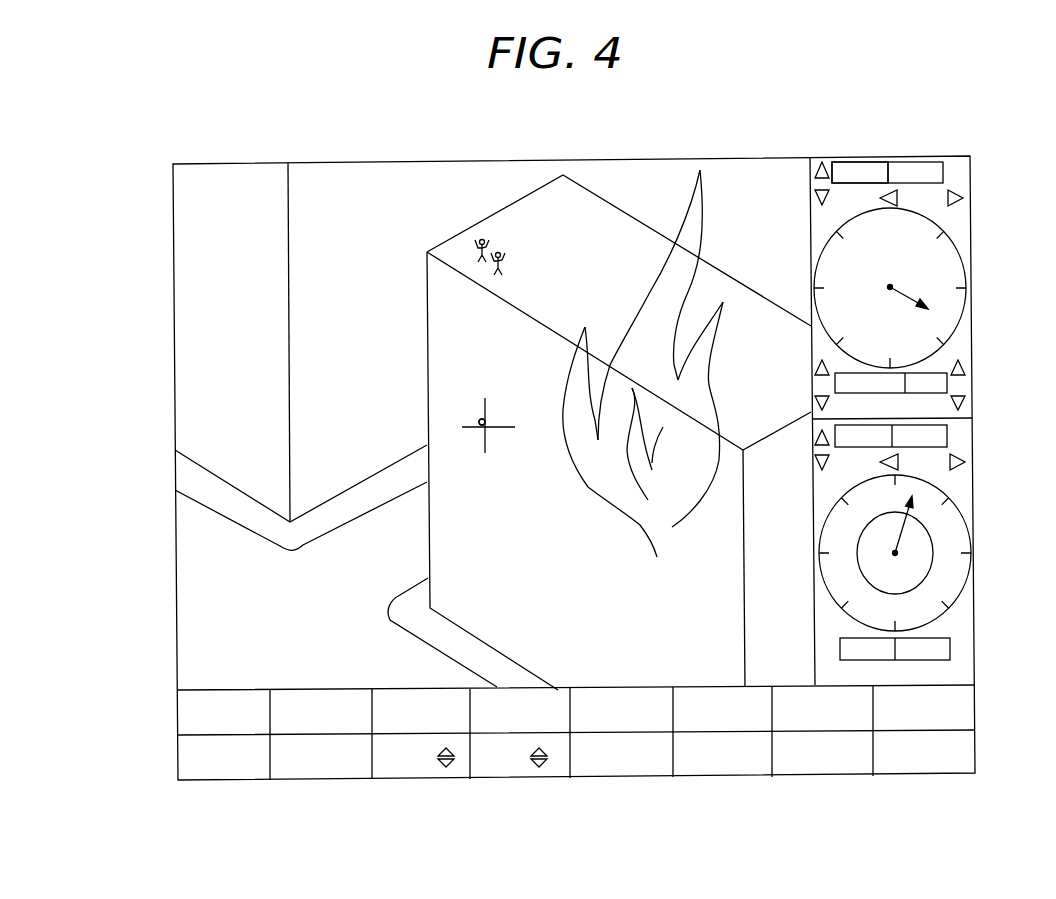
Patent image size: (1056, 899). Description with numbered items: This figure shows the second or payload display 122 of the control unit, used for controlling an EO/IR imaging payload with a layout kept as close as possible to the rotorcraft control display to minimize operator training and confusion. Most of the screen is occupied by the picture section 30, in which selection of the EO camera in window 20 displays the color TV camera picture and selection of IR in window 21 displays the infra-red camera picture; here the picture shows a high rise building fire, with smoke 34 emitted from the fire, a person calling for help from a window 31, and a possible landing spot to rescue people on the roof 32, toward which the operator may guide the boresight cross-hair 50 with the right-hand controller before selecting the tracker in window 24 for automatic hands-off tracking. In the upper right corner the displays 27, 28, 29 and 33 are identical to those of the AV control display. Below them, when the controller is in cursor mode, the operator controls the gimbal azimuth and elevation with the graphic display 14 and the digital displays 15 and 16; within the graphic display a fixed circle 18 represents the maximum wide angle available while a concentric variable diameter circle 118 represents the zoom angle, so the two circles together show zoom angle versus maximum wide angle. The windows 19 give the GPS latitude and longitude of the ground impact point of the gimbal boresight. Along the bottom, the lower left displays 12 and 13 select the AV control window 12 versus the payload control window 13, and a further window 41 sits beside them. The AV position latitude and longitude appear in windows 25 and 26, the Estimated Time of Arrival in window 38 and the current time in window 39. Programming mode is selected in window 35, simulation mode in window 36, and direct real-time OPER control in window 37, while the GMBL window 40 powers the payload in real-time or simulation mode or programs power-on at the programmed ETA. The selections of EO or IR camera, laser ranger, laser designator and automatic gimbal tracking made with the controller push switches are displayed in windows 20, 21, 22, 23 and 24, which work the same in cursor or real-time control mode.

The payload display 122 is at (160, 552).
The picture section 30 is at (352, 193).
The window 31 is at (483, 418).
The roof 32 is at (516, 220).
The smoke 34 is at (630, 369).
The boresight cross-hair 50 is at (481, 425).
The display 28 is at (867, 162).
The display 29 is at (943, 172).
The display 27 is at (945, 268).
The display 33 is at (937, 372).
The digital display 16 is at (945, 435).
The digital display 15 is at (880, 448).
The graphic display 14 is at (947, 530).
The fixed circle 18 is at (968, 583).
The variable diameter circle 118 is at (912, 590).
The windows 19 is at (950, 650).
The AV control window 12 is at (185, 716).
The payload control window 13 is at (232, 778).
The SLAVE button 41 is at (307, 778).
The window 25 is at (355, 727).
The window 39 is at (413, 777).
The window 26 is at (457, 727).
The window 38 is at (510, 777).
The window 37 is at (553, 727).
The window 36 is at (613, 776).
The window 35 is at (653, 727).
The Gimbal window 40 is at (722, 775).
The window 24 is at (752, 725).
The window 23 is at (818, 775).
The window 22 is at (858, 726).
The window 20 is at (975, 704).
The window 21 is at (975, 751).